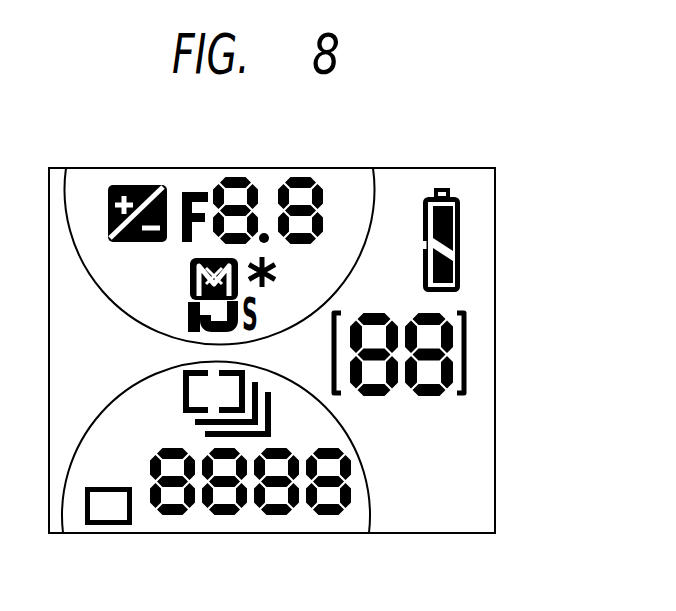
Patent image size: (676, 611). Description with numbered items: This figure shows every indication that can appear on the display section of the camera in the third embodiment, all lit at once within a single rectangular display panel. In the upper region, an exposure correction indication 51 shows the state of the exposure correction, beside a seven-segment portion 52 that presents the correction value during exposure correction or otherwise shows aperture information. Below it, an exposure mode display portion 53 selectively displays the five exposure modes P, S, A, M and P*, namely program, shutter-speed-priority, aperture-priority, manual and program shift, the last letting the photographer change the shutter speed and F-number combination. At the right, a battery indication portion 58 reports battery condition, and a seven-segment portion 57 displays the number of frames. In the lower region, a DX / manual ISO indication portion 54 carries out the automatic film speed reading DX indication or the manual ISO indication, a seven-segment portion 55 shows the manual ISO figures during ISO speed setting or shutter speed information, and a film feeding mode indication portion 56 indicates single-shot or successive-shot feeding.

The exposure correction indication 51 is at (148, 185).
The seven-segment portion for correction value or aperture information 52 is at (234, 178).
The exposure mode display portion 53 is at (272, 295).
The DX / manual ISO indication portion 54 is at (80, 487).
The seven-segment portion for ISO figures or shutter speed information 55 is at (217, 516).
The film feeding mode indication portion 56 is at (278, 410).
The seven-segment portion for number of frames 57 is at (468, 352).
The battery indication portion 58 is at (460, 218).